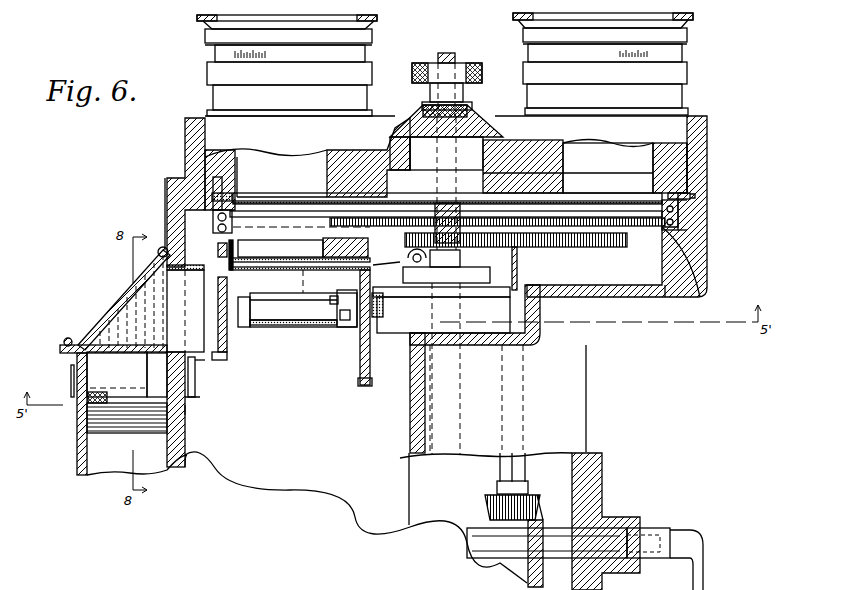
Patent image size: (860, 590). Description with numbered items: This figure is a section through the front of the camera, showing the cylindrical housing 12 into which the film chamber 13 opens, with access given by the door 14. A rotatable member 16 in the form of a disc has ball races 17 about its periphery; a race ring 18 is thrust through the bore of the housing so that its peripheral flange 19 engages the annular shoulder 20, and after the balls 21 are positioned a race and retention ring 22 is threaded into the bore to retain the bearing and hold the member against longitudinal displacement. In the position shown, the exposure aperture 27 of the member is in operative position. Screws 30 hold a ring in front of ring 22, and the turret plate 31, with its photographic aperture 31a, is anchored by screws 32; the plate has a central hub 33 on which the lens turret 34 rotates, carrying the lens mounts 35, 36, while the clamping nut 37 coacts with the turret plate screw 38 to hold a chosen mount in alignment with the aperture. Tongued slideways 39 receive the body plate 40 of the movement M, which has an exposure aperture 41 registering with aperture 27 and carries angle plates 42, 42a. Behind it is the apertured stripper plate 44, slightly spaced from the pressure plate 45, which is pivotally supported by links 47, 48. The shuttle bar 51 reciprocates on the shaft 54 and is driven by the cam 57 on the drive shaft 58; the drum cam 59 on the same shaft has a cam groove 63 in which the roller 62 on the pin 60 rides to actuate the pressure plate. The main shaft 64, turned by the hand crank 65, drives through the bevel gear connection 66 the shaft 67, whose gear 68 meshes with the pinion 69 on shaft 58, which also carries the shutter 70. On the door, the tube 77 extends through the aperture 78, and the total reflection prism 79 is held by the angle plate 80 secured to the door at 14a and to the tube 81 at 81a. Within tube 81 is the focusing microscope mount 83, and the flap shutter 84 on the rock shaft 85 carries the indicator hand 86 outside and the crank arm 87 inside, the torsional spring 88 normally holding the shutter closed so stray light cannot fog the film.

The cylindrical housing 12 is at (718, 256).
The film chamber 13 is at (322, 480).
The door 14 is at (190, 458).
The door attachment point 14a is at (158, 253).
The rotatable member 16 is at (648, 215).
The ball races 17 is at (707, 213).
The race ring 18 is at (705, 228).
The peripheral flange 19 is at (668, 225).
The annular shoulder 20 is at (665, 290).
The balls 21 is at (690, 206).
The race and retention ring 22 is at (700, 198).
The exposure aperture 27 is at (301, 232).
The screws 30 is at (698, 193).
The turret plate 31 is at (712, 175).
The photographic aperture 31a is at (250, 183).
The screws 32 is at (220, 177).
The central hub 33 is at (485, 150).
The lens turret 34 is at (668, 133).
The lens mount 35 is at (357, 54).
The lens mount 36 is at (670, 53).
The clamping nut 37 is at (472, 64).
The turret plate screw 38 is at (446, 53).
The tongued slideways 39 is at (186, 277).
The body plate 40 is at (372, 252).
The exposure aperture 41 is at (268, 250).
The angle plate 42 is at (368, 386).
The angle plate 42a is at (215, 353).
The stripper plate 44 is at (218, 258).
The pressure plate 45 is at (285, 270).
The link 47 is at (256, 327).
The link or crank arm 48 is at (337, 325).
The shuttle bar 51 is at (315, 282).
The shaft 54 is at (441, 360).
The cam 57 is at (483, 277).
The drive shaft 58 is at (462, 262).
The drum cam 59 is at (492, 338).
The pin 60 is at (333, 300).
The roller 62 is at (387, 305).
The cam groove 63 is at (450, 345).
The main shaft 64 is at (605, 540).
The hand crank 65 is at (705, 568).
The bevel gear connection 66 is at (528, 530).
The shaft 67 is at (525, 472).
The gear 68 is at (590, 247).
The pinion 69 is at (457, 203).
The shutter 70 is at (447, 196).
The tube 77 is at (163, 247).
The aperture 78 is at (192, 370).
The total reflection prism 79 is at (145, 302).
The angle plate 80 is at (125, 302).
The tube 81 is at (77, 450).
The tube attachment point 81a is at (68, 340).
The focusing microscope mount 83 is at (125, 428).
The flap shutter 84 is at (127, 374).
The rock shaft 85 is at (185, 417).
The indicator hand 86 is at (71, 378).
The crank arm 87 is at (200, 362).
The torsional spring 88 is at (88, 400).
The movement M is at (296, 340).